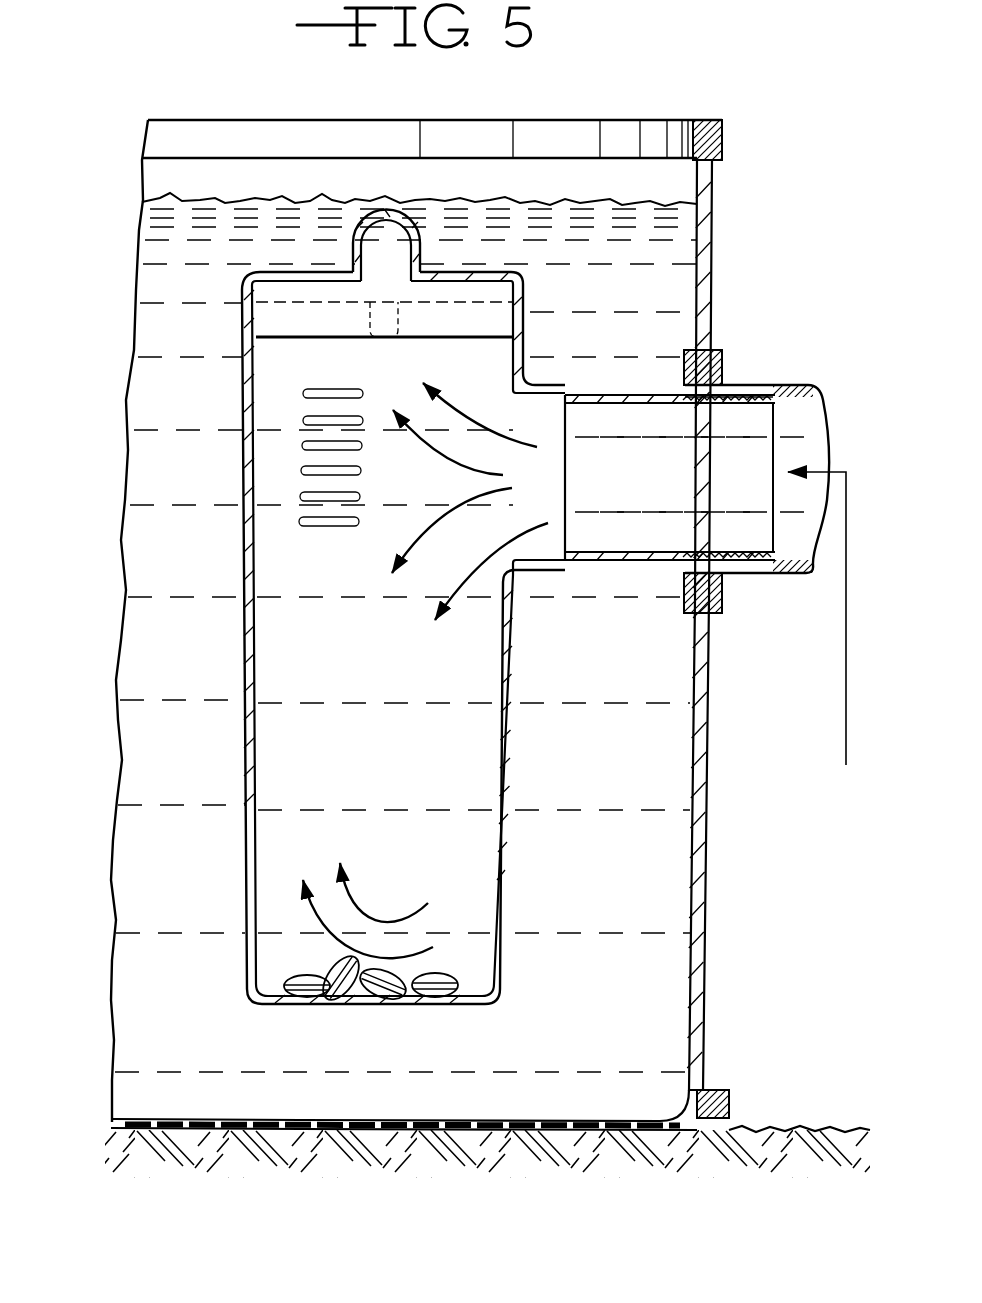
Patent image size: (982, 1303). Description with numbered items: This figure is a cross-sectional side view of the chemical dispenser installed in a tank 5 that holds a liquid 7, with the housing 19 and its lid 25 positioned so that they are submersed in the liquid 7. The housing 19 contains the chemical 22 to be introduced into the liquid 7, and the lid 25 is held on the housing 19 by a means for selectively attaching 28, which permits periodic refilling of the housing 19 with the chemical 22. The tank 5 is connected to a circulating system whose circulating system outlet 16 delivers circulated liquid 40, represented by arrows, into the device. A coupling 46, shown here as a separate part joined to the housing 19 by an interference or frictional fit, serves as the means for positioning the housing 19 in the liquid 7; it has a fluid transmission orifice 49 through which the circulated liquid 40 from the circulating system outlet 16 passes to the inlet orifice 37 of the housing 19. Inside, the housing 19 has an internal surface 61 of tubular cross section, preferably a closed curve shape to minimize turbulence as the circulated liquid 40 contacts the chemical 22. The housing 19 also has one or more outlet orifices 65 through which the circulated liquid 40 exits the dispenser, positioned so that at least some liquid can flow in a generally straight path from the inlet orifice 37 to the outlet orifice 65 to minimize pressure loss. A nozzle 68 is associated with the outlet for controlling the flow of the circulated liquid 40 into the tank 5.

The tank 5 is at (712, 210).
The liquid 7 is at (513, 207).
The circulating system outlet 16 is at (765, 385).
The housing 19 is at (245, 748).
The chemical 22 is at (437, 973).
The lid 25 is at (527, 283).
The means for selectively attaching 28 is at (417, 318).
The inlet orifice 37 is at (523, 395).
The circulated liquid 40 is at (523, 527).
The coupling 46 is at (660, 403).
The fluid transmission orifice 49 is at (645, 490).
The internal surface 61 is at (258, 628).
The outlet orifice 65 is at (293, 532).
The nozzle 68 is at (420, 250).